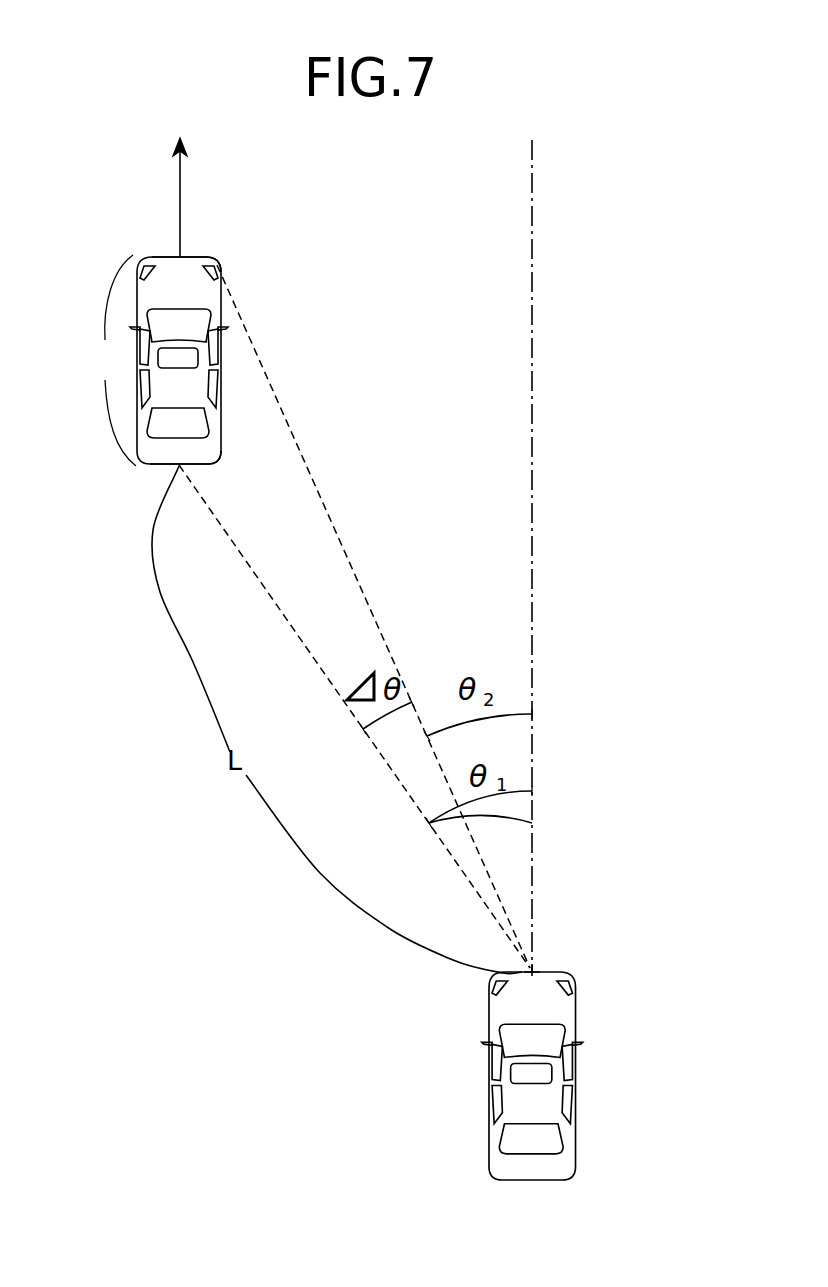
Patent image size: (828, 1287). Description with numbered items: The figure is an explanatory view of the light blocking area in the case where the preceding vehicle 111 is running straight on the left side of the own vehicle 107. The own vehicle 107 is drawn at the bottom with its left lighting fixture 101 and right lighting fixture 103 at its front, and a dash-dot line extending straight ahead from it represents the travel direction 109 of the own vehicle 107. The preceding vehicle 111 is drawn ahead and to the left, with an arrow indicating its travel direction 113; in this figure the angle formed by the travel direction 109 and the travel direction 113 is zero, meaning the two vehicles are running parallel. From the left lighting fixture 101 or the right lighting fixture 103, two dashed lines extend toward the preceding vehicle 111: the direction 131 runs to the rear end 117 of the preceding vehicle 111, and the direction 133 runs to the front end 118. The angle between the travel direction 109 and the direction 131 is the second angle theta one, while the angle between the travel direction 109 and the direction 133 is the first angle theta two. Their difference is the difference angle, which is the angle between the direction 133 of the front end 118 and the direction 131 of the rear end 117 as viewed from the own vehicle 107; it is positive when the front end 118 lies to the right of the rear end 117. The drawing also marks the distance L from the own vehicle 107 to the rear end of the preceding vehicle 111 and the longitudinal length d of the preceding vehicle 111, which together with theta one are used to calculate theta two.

The left lighting fixture 101 is at (598, 956).
The right lighting fixture 103 is at (536, 970).
The own vehicle 107 is at (576, 1066).
The travel direction of the own vehicle 109 is at (533, 494).
The preceding vehicle 111 is at (222, 305).
The travel direction of the preceding vehicle 113 is at (181, 196).
The rear end of the preceding vehicle 117 is at (150, 469).
The front end of the preceding vehicle 118 is at (205, 258).
The direction to the rear end 131 is at (277, 612).
The direction to the front end 133 is at (277, 395).